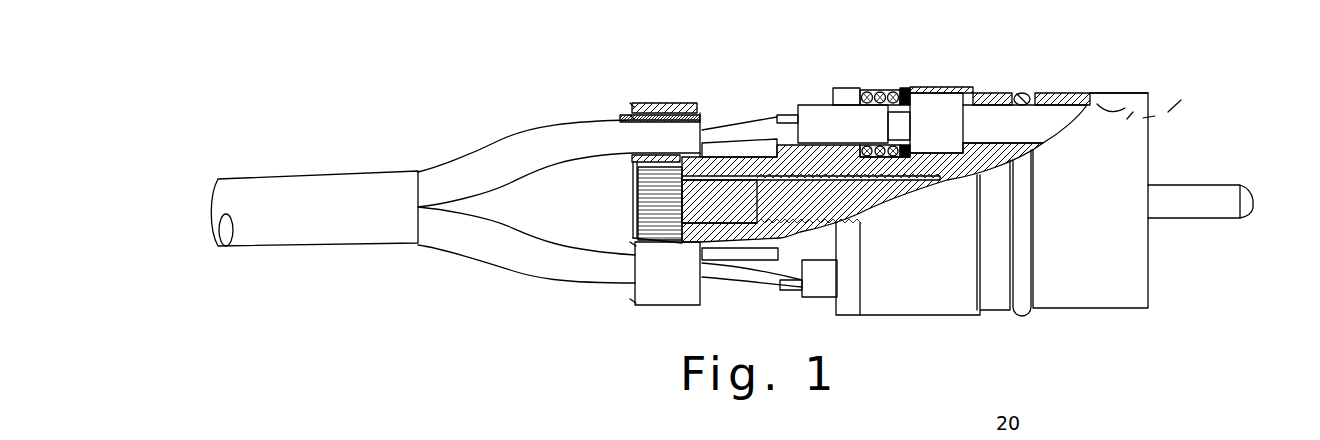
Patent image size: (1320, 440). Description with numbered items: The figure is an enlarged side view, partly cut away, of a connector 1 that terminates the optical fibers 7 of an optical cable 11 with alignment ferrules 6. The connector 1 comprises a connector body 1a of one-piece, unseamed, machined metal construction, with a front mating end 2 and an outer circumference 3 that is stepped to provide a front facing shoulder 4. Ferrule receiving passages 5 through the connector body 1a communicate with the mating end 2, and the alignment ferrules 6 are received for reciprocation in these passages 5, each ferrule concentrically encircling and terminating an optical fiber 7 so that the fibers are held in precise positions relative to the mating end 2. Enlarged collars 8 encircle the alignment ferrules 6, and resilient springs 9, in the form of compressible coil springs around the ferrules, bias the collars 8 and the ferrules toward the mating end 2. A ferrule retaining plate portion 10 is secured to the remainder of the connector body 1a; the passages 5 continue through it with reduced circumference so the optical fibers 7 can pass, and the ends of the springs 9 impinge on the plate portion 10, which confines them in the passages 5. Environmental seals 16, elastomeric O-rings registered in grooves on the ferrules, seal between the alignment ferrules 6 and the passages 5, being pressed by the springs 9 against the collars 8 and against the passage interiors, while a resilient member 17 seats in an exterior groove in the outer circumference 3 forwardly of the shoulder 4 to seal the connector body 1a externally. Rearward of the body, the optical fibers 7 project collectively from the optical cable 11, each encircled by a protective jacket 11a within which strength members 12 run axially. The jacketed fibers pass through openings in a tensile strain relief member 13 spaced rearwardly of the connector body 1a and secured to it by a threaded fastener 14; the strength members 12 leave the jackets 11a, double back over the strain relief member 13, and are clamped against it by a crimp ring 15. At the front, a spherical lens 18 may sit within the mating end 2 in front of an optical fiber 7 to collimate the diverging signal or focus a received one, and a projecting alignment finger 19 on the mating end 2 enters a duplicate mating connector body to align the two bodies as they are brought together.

The connector 1 is at (801, 88).
The connector body 1a is at (1140, 84).
The front mating end 2 is at (1150, 160).
The outer circumference 3 is at (1062, 100).
The front facing shoulder 4 is at (982, 90).
The ferrule receiving passages 5 is at (1080, 100).
The alignment ferrules 6 is at (820, 290).
The optical fibers 7 is at (757, 127).
The enlarged collars 8 is at (928, 110).
The resilient springs 9 is at (877, 92).
The ferrule retaining plate portion 10 is at (850, 290).
The optical cable 11 is at (262, 186).
The protective jacket 11a is at (478, 172).
The strength members 12 is at (703, 108).
The tensile strain relief member 13 is at (633, 165).
The threaded fastener 14 is at (645, 238).
The crimp ring 15 is at (662, 292).
The environmental seals 16 is at (902, 93).
The resilient member 17 is at (1025, 93).
The spherical lens 18 is at (1152, 91).
The projecting alignment finger 19 is at (1226, 200).